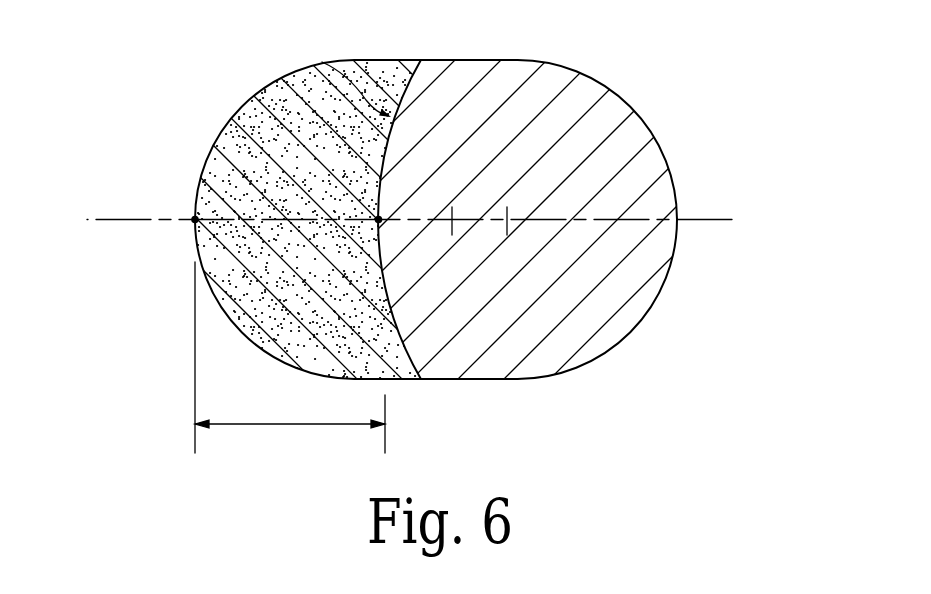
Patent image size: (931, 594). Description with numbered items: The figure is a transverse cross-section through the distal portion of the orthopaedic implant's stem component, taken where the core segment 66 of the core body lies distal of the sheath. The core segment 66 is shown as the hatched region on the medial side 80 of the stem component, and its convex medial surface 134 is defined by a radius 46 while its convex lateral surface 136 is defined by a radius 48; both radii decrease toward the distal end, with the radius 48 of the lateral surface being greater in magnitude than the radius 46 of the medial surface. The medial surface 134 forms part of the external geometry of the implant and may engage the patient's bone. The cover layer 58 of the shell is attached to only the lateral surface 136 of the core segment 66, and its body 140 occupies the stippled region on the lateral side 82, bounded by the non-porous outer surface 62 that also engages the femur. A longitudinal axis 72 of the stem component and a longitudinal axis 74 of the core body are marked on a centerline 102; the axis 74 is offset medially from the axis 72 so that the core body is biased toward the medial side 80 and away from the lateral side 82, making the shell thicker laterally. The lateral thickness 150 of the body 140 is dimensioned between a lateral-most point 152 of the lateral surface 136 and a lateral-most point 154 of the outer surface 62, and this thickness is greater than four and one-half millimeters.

The radius 46 is at (655, 111).
The radius 48 is at (396, 78).
The cover layer 58 is at (212, 148).
The outer surface 62 is at (242, 108).
The core segment 66 is at (608, 110).
The longitudinal axis 72 is at (452, 207).
The longitudinal axis 74 is at (507, 207).
The medial side 80 is at (712, 192).
The lateral side 82 is at (178, 245).
The longitudinal axis 102 is at (108, 218).
The medial surface 134 is at (675, 257).
The lateral surface 136 is at (322, 62).
The body 140 is at (213, 175).
The lateral thickness 150 is at (293, 424).
The lateral-most point 152 is at (379, 219).
The lateral-most point 154 is at (195, 219).